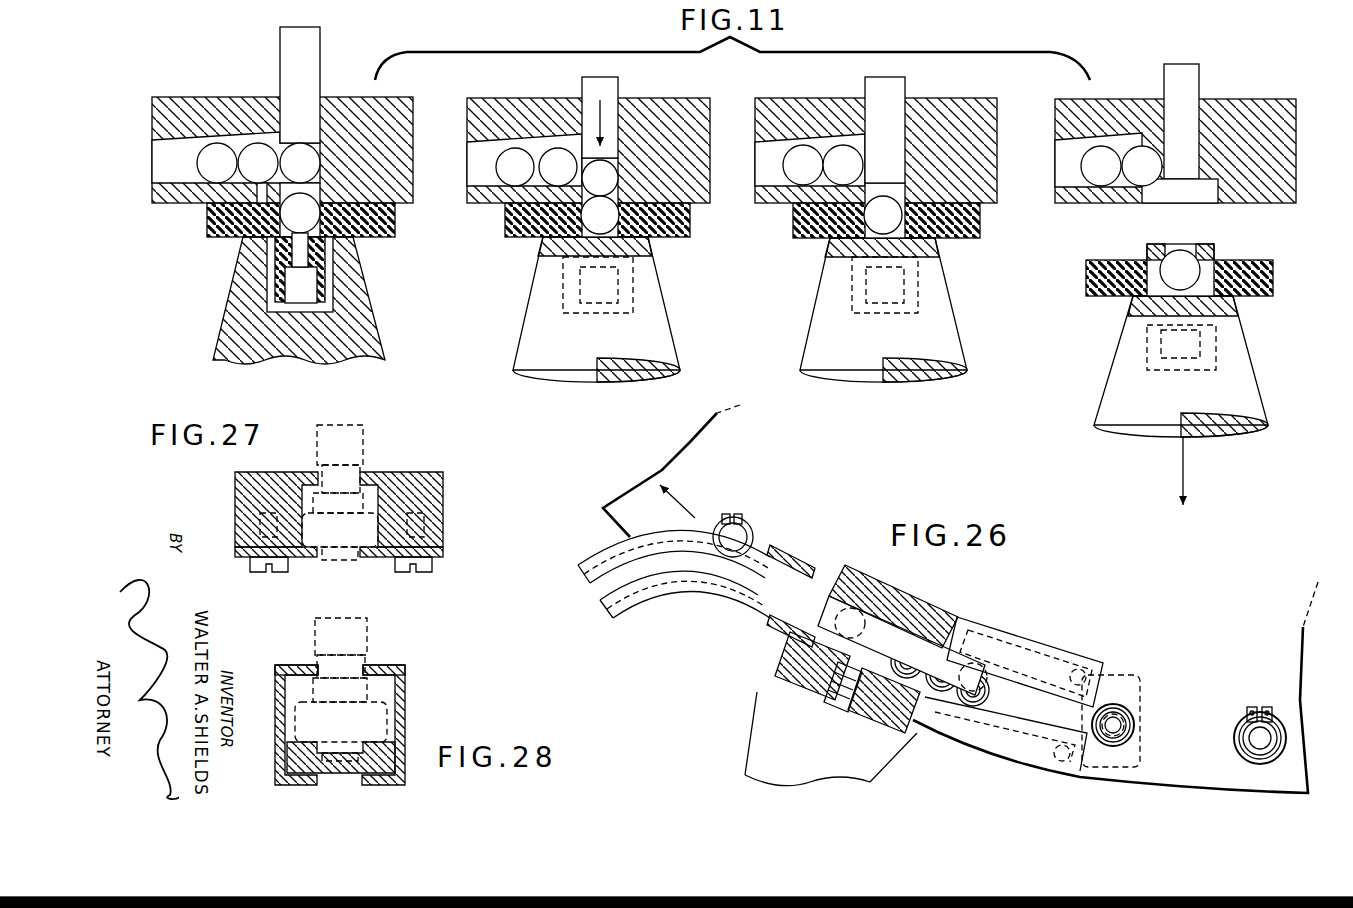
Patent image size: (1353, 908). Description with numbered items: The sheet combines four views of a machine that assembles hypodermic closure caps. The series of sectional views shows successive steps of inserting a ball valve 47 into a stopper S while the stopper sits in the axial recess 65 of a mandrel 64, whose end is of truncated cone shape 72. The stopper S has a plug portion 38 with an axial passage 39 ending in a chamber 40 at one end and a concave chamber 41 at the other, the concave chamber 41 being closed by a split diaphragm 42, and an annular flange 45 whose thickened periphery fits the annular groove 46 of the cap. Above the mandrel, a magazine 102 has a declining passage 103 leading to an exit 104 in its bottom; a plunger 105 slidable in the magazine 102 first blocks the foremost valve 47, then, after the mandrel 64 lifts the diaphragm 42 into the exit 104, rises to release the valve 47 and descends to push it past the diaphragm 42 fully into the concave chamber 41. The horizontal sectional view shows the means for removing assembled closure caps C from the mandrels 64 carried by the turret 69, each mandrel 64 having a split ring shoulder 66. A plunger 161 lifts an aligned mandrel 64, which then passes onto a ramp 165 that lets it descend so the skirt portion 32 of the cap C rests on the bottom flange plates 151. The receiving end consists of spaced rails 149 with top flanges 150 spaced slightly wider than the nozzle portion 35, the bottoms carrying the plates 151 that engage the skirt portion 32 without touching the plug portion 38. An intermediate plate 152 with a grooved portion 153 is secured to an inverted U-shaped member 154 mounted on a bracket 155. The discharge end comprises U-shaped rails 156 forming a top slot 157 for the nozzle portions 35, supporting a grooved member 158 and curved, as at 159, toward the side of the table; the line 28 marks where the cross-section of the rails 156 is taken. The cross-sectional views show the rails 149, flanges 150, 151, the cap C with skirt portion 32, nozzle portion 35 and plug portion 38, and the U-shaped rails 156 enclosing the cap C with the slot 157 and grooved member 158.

In FIG. 11, the plunger 105 is at (321, 55).
In FIG. 11, the magazine 102 is at (462, 100).
In FIG. 11, the ball valve 47 is at (200, 160).
In FIG. 11, the passage 103 is at (163, 170).
In FIG. 11, the diaphragm 42 is at (335, 205).
In FIG. 11, the exit 104 is at (365, 172).
In FIG. 11, the annular flange 45 is at (372, 213).
In FIG. 11, the stopper S is at (203, 222).
In FIG. 11, the axial passage 39 is at (297, 251).
In FIG. 11, the concave chamber 41 is at (337, 248).
In FIG. 11, the plug portion 38 is at (334, 279).
In FIG. 27, the plug portion 38 is at (326, 557).
In FIG. 28, the plug portion 38 is at (352, 780).
In FIG. 11, the axial recess 65 is at (560, 316).
In FIG. 11, the truncated cone end 72 is at (520, 336).
In FIG. 11, the chamber 40 is at (298, 294).
In FIG. 11, the mandrel 64 is at (353, 361).
In FIG. 26, the mandrel 64 is at (750, 527).
In FIG. 11, the annular groove 46 is at (500, 227).
In FIG. 27, the rails 149 is at (238, 509).
In FIG. 26, the rails 149 is at (1030, 643).
In FIG. 27, the top flanges 150 is at (309, 480).
In FIG. 26, the top flanges 150 is at (1040, 668).
In FIG. 27, the nozzle portion 35 is at (361, 478).
In FIG. 28, the nozzle portion 35 is at (368, 657).
In FIG. 26, the nozzle portion 35 is at (1120, 725).
In FIG. 27, the skirt portion 32 is at (350, 538).
In FIG. 28, the skirt portion 32 is at (297, 710).
In FIG. 27, the bottom flange plates 151 is at (380, 558).
In FIG. 28, the U-shaped rails 156 is at (277, 668).
In FIG. 26, the U-shaped rails 156 is at (813, 583).
In FIG. 28, the slot 157 is at (323, 677).
In FIG. 26, the slot 157 is at (592, 586).
In FIG. 28, the grooved member 158 is at (334, 777).
In FIG. 26, the grooved member 158 is at (603, 612).
In FIG. 26, the curved portion 159 is at (668, 604).
In FIG. 26, the section line 28- 28 is at (587, 537).
In FIG. 26, the turret 69 is at (608, 500).
In FIG. 26, the split ring shoulder 66 is at (722, 517).
In FIG. 26, the grooved portion 153 is at (832, 590).
In FIG. 26, the inverted U-shaped member 154 is at (910, 607).
In FIG. 26, the bracket 155 is at (777, 703).
In FIG. 26, the plate 152 is at (918, 723).
In FIG. 26, the ramp 165 is at (1120, 671).
In FIG. 26, the plunger 161 is at (1130, 745).
In FIG. 28, the closure cap C is at (338, 725).
In FIG. 26, the closure cap C is at (1270, 727).